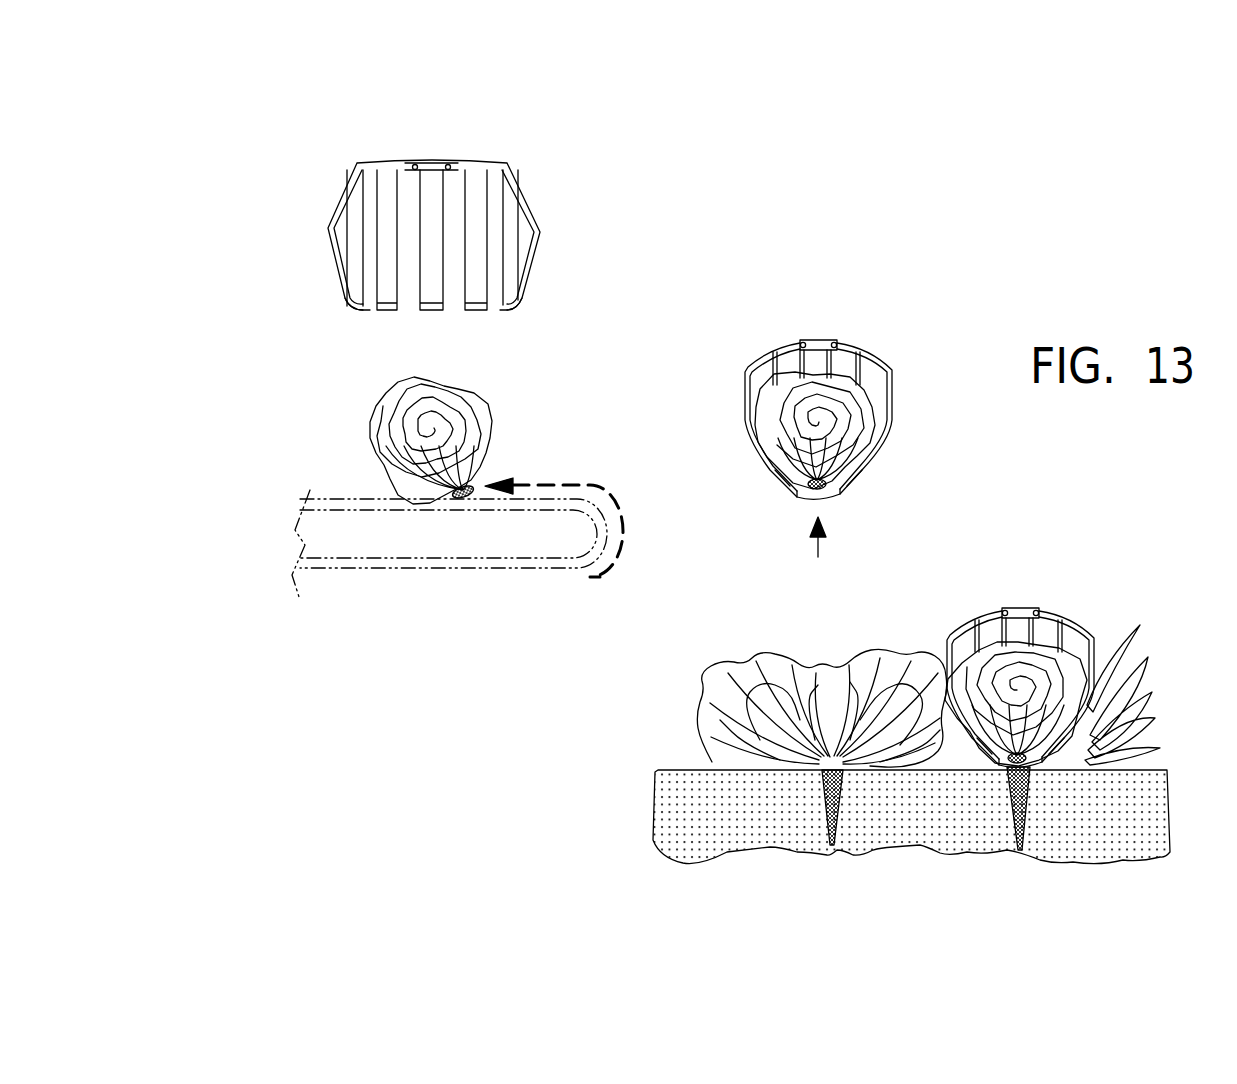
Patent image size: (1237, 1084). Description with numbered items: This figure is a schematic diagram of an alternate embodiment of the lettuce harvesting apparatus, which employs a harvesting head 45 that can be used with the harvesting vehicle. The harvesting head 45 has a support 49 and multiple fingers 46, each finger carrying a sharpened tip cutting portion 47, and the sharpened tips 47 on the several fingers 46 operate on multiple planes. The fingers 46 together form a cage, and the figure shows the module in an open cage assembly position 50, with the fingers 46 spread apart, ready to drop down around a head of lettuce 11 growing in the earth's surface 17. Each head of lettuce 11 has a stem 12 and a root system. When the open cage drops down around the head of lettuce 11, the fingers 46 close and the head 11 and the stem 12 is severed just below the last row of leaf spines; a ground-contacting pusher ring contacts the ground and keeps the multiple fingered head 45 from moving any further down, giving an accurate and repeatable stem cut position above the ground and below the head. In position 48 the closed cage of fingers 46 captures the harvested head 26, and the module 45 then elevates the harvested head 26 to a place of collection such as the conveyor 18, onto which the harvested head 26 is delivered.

The head of lettuce 11 is at (1113, 660).
The stem 12 is at (827, 807).
The earth's surface 17 is at (683, 770).
The conveyor 18 is at (493, 570).
The harvested head 26 is at (487, 413).
The harvesting head 45 is at (582, 210).
The fingers 46 is at (373, 252).
The sharpened tip cutting portion 47 is at (363, 310).
The captured head position 48 is at (1010, 580).
The support 49 is at (430, 162).
The open cage assembly position 50 is at (340, 160).